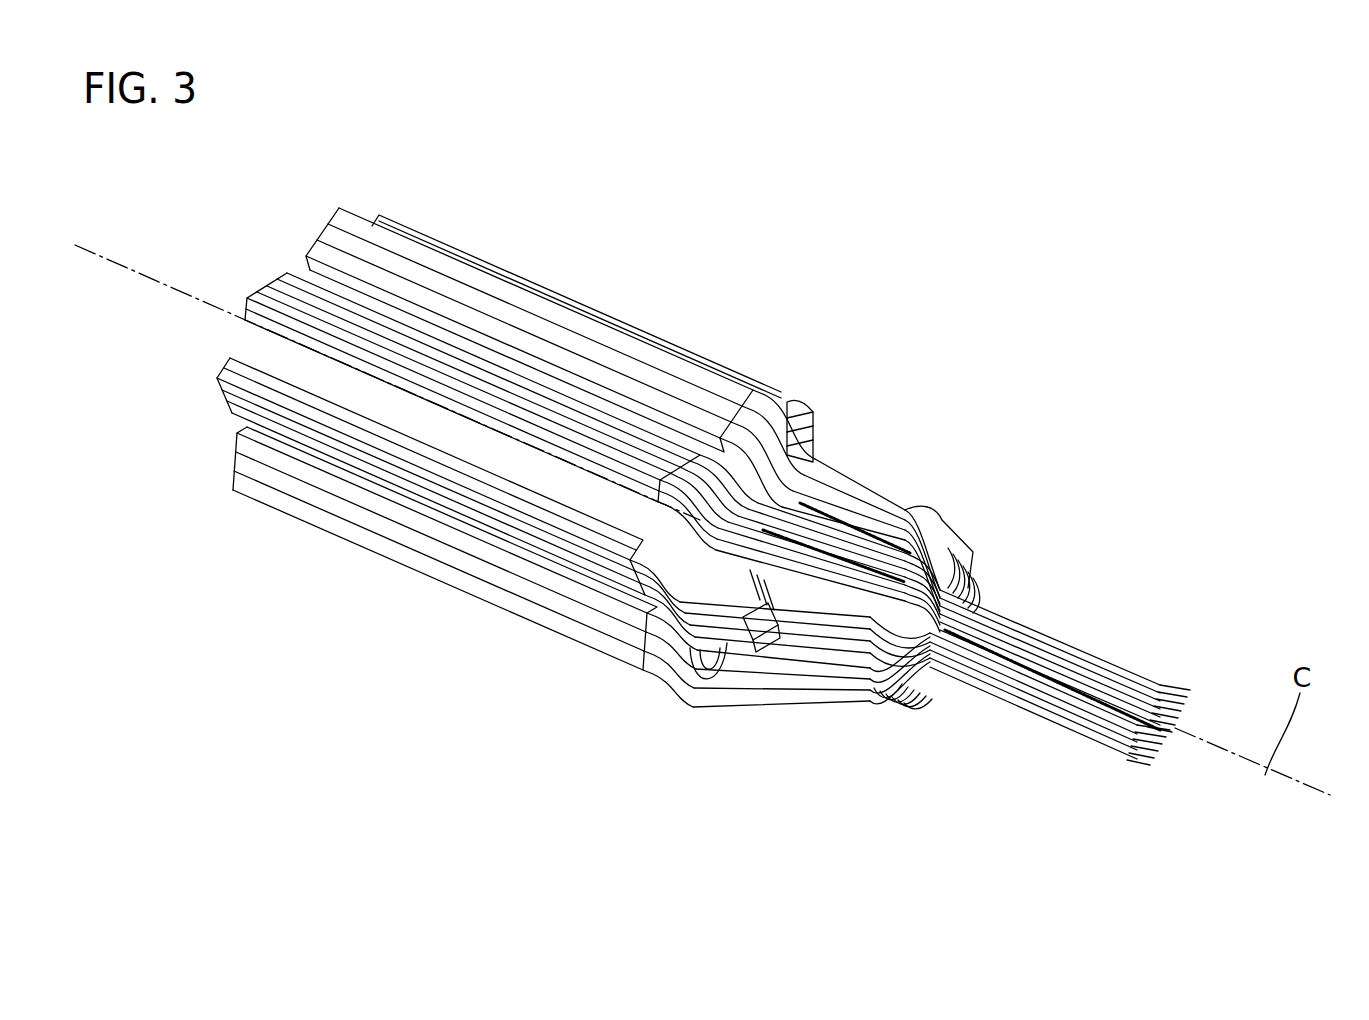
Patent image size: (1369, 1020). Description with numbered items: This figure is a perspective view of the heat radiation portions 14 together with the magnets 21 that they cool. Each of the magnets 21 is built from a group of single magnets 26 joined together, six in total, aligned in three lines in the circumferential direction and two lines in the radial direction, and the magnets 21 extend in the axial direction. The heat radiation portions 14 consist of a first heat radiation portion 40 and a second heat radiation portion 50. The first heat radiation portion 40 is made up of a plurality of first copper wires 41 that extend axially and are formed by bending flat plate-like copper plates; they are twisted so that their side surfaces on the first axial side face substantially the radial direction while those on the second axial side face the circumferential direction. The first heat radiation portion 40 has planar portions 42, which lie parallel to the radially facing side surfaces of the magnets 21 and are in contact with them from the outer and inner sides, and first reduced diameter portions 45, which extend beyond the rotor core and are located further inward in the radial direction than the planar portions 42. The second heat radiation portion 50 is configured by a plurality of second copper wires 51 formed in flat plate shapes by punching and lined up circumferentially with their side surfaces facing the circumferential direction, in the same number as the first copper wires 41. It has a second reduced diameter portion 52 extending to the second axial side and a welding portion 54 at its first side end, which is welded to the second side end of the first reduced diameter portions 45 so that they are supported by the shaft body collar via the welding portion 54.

The heat radiation portions 14 is at (708, 459).
The magnets 21 is at (486, 287).
The single magnets 26 is at (337, 213).
The first heat radiation portion 40 is at (820, 411).
The first copper wires 41 is at (683, 668).
The planar portions 42 is at (663, 663).
The first reduced diameter portions 45 is at (740, 632).
The second heat radiation portion 50 is at (955, 528).
The second copper wires 51 is at (1143, 683).
The second reduced diameter portion 52 is at (1055, 708).
The welding portion 54 is at (830, 505).